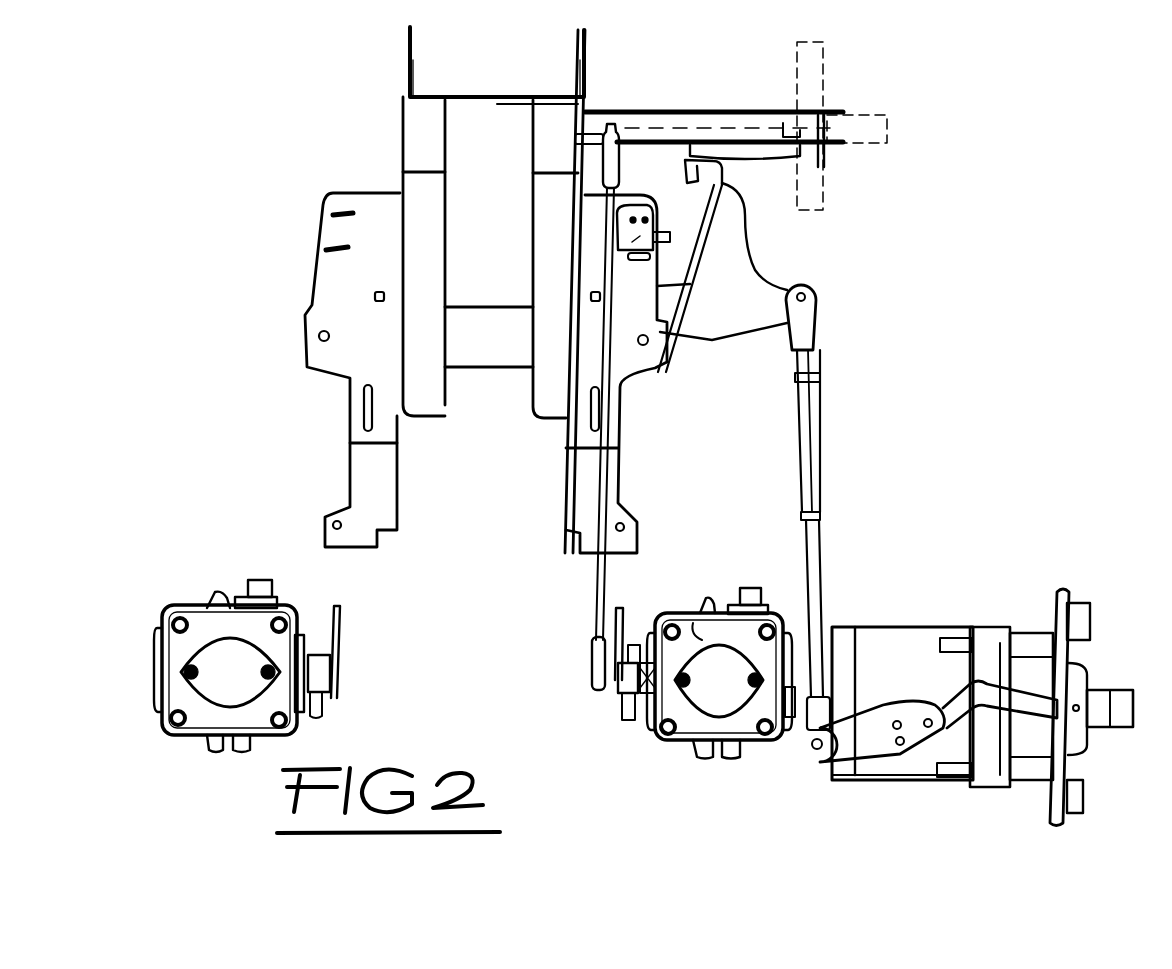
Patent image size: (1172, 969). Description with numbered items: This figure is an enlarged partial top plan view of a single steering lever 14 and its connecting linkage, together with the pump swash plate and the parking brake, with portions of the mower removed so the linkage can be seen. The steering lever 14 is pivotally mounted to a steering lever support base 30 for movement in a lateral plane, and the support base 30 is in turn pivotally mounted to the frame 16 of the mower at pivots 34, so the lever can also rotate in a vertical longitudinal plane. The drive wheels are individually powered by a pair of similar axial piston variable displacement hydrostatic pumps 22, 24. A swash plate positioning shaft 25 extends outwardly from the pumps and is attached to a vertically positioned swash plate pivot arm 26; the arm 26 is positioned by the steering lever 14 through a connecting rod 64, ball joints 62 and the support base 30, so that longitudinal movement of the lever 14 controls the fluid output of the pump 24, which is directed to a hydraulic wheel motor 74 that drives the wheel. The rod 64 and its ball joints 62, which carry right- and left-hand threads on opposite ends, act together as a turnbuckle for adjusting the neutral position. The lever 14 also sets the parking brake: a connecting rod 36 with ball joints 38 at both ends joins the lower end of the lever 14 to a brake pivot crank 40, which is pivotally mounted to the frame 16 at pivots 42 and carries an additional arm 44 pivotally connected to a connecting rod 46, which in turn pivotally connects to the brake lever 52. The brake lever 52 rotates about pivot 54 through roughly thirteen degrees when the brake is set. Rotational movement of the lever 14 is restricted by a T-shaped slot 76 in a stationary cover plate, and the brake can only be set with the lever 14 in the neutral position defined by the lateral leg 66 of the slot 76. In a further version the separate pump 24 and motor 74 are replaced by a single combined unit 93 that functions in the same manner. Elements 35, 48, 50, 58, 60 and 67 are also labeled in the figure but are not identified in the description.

The steering lever 14 is at (830, 158).
The frame 16 is at (375, 338).
The hydrostatic pump 22 is at (193, 605).
The hydrostatic pump 24 is at (705, 607).
The swash plate positioning shaft 25 is at (605, 688).
The swash plate pivot arm 26 is at (338, 673).
The steering lever support base 30 is at (700, 104).
The pivots 34 is at (551, 93).
The mounting plate 35 is at (572, 126).
The connecting rod 36 is at (747, 160).
The ball joints 38 is at (690, 147).
The brake pivot crank 40 is at (740, 311).
The pivots 42 is at (643, 345).
The arm 44 is at (737, 327).
The connecting rod 46 is at (820, 548).
The clevis joint 48 is at (818, 298).
The adjustable sleeve 50 is at (822, 437).
The brake lever 52 is at (947, 703).
The pivot 54 is at (1047, 653).
The adjustment block 58 is at (613, 250).
The pivot plate 60 is at (703, 243).
The ball joint 62 is at (624, 108).
The connecting rod 64 is at (600, 593).
The lateral leg 66 is at (868, 117).
The governor lever 67 is at (812, 70).
The hydraulic wheel motor 74 is at (900, 692).
The T-shaped slot 76 is at (833, 99).
The combined pump and motor unit 93 is at (1087, 603).